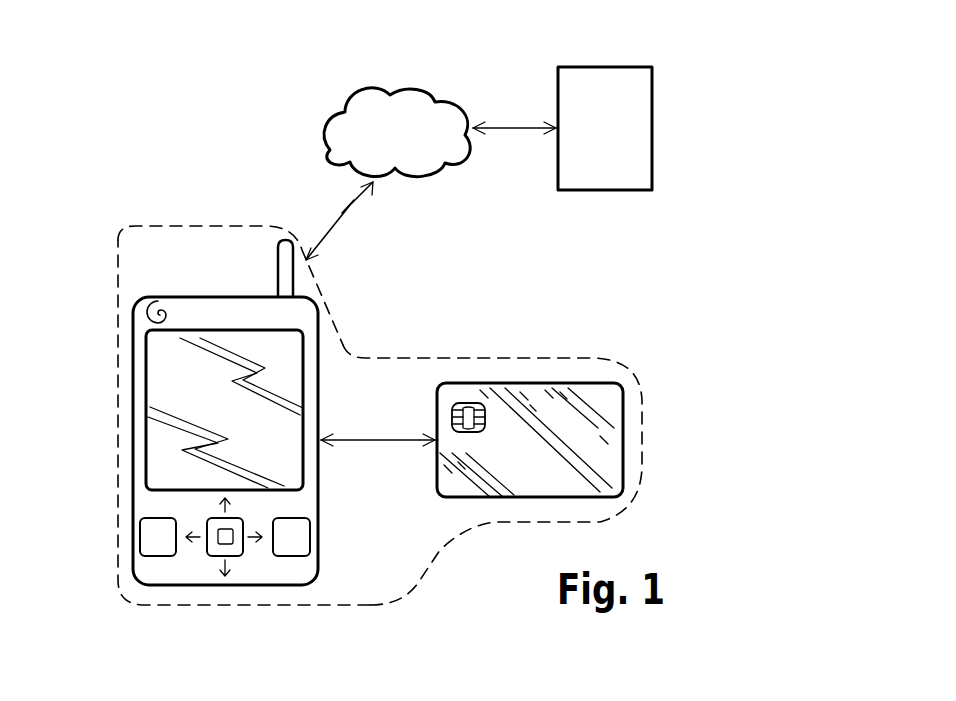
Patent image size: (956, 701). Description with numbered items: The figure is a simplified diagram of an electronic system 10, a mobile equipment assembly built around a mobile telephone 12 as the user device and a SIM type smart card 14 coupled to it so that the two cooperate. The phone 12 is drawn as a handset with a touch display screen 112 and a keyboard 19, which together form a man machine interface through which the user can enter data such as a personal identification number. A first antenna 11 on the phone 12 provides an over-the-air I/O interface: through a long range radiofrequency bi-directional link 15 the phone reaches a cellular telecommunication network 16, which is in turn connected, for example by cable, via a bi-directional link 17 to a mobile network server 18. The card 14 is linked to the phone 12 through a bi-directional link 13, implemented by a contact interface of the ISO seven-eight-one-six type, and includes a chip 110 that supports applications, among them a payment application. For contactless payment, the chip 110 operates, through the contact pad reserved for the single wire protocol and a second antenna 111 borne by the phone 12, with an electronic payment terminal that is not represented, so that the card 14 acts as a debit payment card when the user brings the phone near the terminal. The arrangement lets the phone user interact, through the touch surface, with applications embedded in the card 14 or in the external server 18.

The electronic system 10 is at (190, 225).
The first antenna 11 is at (281, 269).
The mobile telephone 12 is at (338, 352).
The bi-directional link 13 is at (377, 442).
The SIM type smart card 14 is at (538, 383).
The long range radiofrequency bi-directional link 15 is at (372, 238).
The cellular telecommunication network 16 is at (381, 93).
The bi-directional link 17 is at (508, 130).
The mobile network server 18 is at (652, 128).
The keyboard 19 is at (290, 547).
The chip 110 is at (470, 404).
The second antenna 111 is at (158, 301).
The touch display screen 112 is at (158, 358).